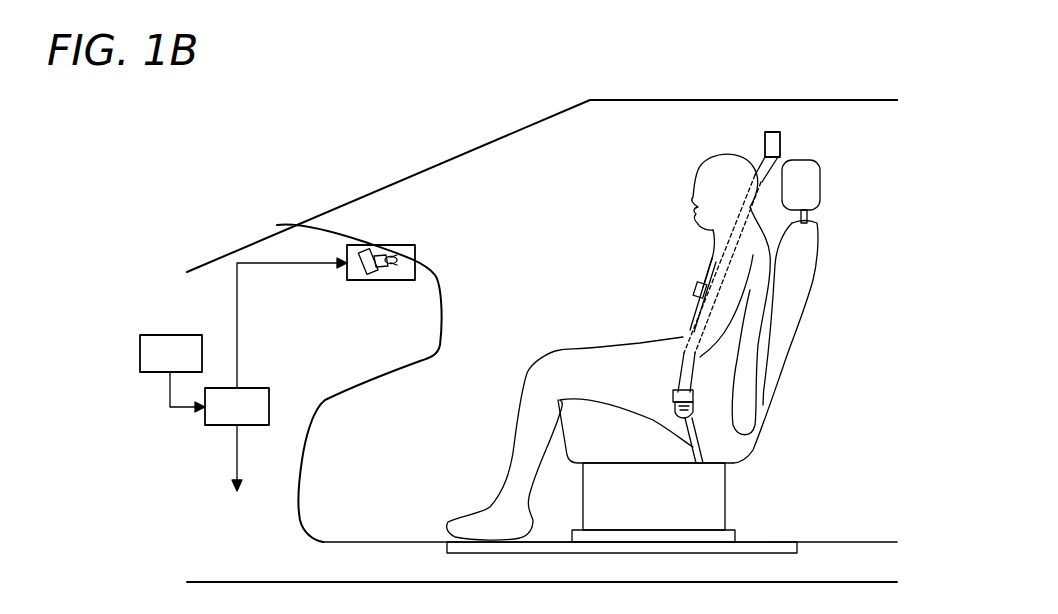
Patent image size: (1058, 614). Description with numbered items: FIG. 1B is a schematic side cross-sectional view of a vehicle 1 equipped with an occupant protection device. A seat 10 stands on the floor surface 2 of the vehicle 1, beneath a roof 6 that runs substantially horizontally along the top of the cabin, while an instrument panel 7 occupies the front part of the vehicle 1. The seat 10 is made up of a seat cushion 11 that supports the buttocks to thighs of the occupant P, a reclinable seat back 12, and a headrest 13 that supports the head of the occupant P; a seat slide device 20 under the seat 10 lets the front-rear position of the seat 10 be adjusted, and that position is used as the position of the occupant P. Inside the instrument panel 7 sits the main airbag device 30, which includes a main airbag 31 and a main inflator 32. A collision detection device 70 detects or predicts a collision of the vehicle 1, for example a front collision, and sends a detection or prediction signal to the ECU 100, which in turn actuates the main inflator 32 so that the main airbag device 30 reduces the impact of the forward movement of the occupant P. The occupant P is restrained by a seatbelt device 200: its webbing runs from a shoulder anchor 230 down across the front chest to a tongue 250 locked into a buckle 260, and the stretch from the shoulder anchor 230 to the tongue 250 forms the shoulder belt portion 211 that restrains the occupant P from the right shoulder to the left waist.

The vehicle 1 is at (842, 64).
The floor surface 2 is at (882, 541).
The roof 6 is at (760, 100).
The instrument panel 7 is at (318, 226).
The seat 10 is at (736, 365).
The seat cushion 11 is at (648, 447).
The seat back 12 is at (798, 325).
The headrest 13 is at (800, 160).
The seat slide device 20 is at (707, 535).
The main airbag device 30 is at (377, 282).
The main airbag 31 is at (398, 260).
The main inflator 32 is at (376, 248).
The collision detection device 70 is at (163, 335).
The ECU 100 is at (272, 388).
The seatbelt device 200 is at (700, 283).
The shoulder belt portion 211 is at (696, 292).
The shoulder anchor 230 is at (765, 150).
The tongue 250 is at (698, 393).
The buckle 260 is at (698, 412).
The occupant P is at (730, 167).